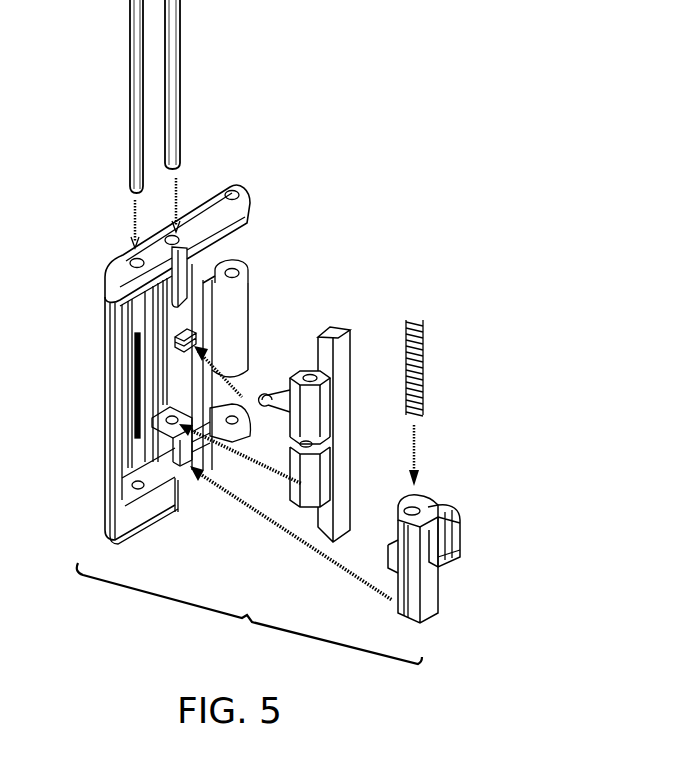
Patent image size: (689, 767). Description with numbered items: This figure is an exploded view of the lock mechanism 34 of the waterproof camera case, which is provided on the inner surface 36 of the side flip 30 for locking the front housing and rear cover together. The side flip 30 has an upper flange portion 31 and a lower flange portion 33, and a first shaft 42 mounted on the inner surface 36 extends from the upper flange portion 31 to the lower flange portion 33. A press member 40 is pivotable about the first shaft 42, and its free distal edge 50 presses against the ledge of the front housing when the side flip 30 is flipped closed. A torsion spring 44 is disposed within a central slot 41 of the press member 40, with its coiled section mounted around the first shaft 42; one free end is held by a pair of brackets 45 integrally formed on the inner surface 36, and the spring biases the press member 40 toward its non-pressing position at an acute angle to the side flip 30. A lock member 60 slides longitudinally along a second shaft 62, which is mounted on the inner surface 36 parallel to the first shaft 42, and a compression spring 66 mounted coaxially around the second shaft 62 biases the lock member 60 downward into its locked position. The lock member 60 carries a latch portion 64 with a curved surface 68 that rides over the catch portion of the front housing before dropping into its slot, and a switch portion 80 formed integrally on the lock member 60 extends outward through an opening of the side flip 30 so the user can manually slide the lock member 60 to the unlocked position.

The side flip 30 is at (103, 320).
The upper flange portion 31 is at (245, 196).
The lower flange portion 33 is at (244, 443).
The lock mechanism 34 is at (302, 211).
The inner surface 36 is at (148, 388).
The press member 40 is at (337, 330).
The central slot 41 is at (338, 444).
The first shaft 42 is at (181, 38).
The torsion spring 44 is at (259, 390).
The brackets 45 is at (195, 332).
The free distal edge 50 is at (352, 355).
The lock member 60 is at (440, 588).
The second shaft 62 is at (130, 64).
The latch portion 64 is at (458, 548).
The compression spring 66 is at (428, 363).
The curved surface 68 is at (456, 558).
The switch portion 80 is at (392, 560).